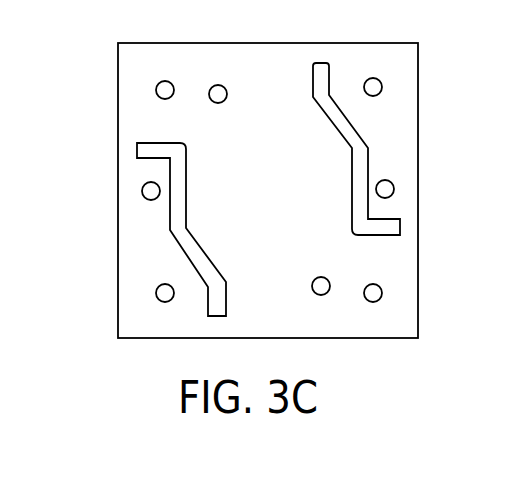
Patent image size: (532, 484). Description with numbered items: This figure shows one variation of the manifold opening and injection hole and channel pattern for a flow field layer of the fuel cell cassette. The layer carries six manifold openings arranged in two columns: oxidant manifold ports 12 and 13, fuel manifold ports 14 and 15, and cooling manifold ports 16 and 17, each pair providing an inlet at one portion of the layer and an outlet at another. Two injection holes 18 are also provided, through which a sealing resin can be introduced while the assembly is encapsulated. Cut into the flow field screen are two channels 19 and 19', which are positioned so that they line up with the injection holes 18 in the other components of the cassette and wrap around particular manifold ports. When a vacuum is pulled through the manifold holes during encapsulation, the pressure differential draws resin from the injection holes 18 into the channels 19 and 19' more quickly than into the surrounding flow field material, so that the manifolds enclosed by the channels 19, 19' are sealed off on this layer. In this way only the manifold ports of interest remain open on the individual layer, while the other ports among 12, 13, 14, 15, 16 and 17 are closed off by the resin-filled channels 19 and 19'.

The oxidant manifold port 12 is at (382, 293).
The oxidant manifold port 13 is at (156, 90).
The fuel manifold port 14 is at (382, 87).
The fuel manifold port 15 is at (156, 293).
The cooling manifold port 16 is at (394, 189).
The cooling manifold port 17 is at (142, 191).
The injection hole 18 is at (309, 193).
The channel 19 is at (134, 226).
The channel 19' is at (410, 152).